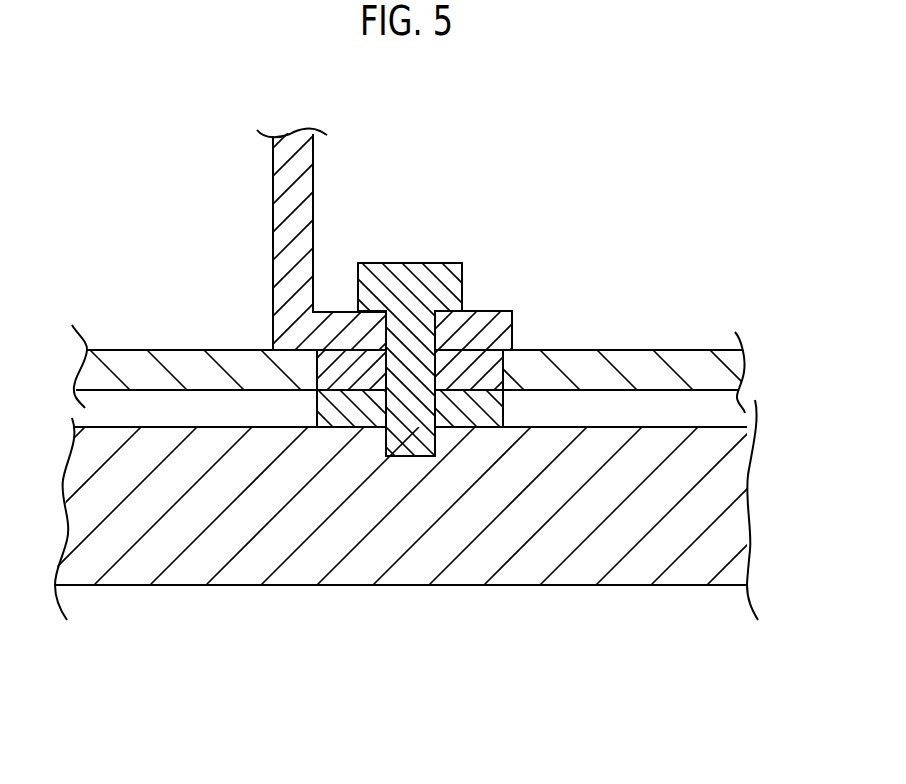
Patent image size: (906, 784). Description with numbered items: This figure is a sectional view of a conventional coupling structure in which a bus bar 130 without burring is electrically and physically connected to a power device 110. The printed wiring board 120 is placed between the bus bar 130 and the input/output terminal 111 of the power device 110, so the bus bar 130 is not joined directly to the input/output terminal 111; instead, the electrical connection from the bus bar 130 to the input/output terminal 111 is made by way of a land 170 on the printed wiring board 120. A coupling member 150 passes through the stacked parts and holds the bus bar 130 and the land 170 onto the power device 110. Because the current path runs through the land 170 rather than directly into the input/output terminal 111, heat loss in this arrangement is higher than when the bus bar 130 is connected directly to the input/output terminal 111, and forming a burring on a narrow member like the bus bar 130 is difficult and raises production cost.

The power device 110 is at (573, 573).
The input/output terminal 111 is at (497, 403).
The printed wiring board 120 is at (132, 356).
The bus bar 130 is at (287, 213).
The contact plug 150 is at (437, 265).
The land 170 is at (475, 355).